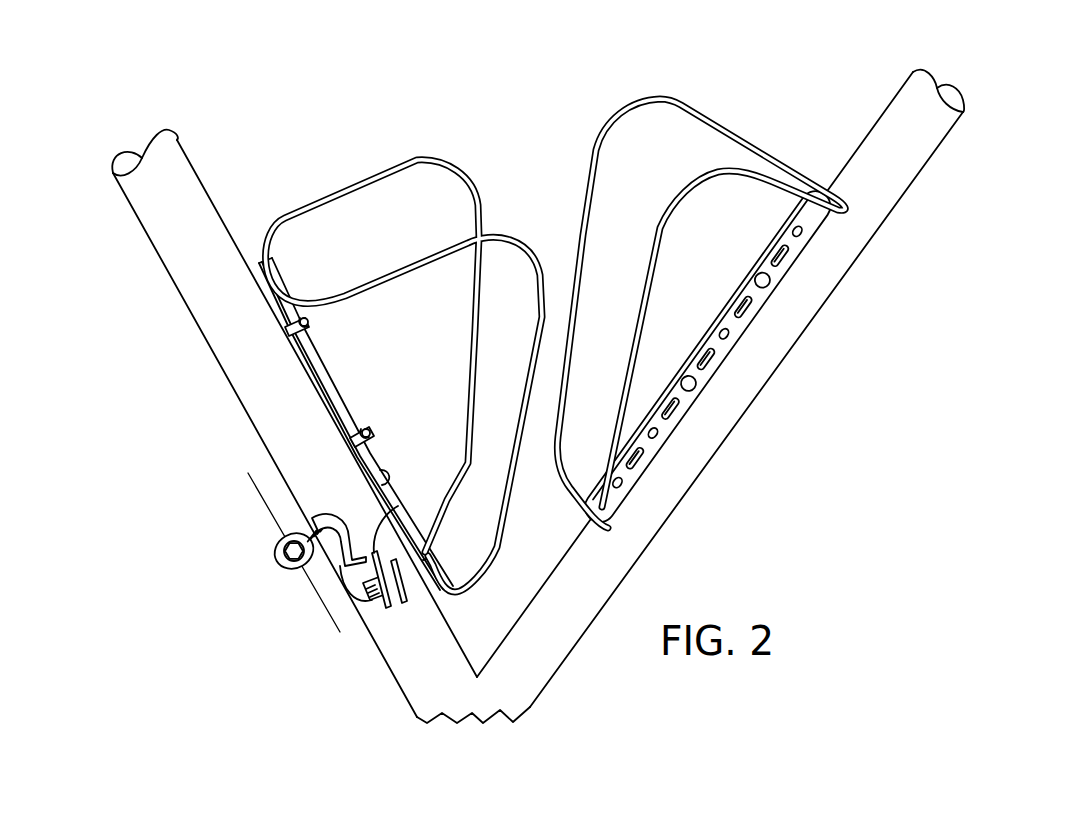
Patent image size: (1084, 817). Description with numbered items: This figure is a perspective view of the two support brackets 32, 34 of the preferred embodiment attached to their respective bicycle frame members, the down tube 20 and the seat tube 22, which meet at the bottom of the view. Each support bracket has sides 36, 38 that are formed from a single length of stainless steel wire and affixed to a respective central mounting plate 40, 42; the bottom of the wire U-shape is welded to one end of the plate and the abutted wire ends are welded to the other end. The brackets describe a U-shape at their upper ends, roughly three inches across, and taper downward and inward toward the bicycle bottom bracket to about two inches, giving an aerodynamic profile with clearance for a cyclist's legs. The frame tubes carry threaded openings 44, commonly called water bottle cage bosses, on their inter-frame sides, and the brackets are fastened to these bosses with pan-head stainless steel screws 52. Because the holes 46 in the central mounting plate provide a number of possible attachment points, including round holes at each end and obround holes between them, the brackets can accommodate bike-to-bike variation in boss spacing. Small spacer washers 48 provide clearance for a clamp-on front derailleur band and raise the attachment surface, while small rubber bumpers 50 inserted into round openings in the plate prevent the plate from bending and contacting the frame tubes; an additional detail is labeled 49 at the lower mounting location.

The frame tube 20 is at (580, 636).
The frame tube 22 is at (185, 297).
The support bracket 32 is at (689, 275).
The support bracket 34 is at (404, 325).
The side of the support bracket 36 is at (584, 190).
The side of the support bracket 38 is at (355, 181).
The central mounting plate 40 is at (702, 356).
The central mounting plate 42 is at (319, 392).
The threaded openings 44 is at (287, 337).
The holes 46 is at (670, 395).
The spacer washers 48 is at (286, 322).
The hook 49 is at (395, 535).
The rubber bumpers 50 is at (393, 478).
The pan-head stainless steel screws 52 is at (312, 322).